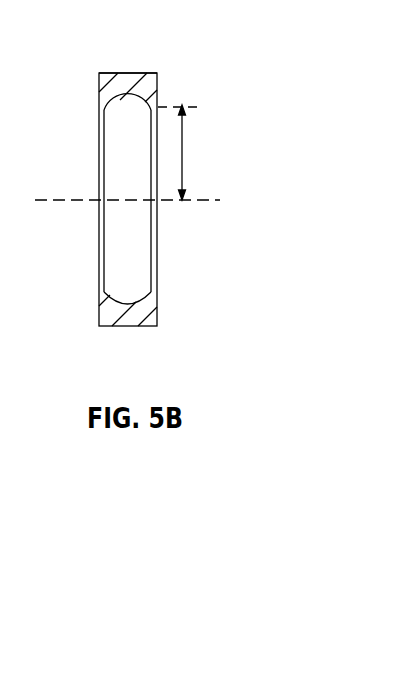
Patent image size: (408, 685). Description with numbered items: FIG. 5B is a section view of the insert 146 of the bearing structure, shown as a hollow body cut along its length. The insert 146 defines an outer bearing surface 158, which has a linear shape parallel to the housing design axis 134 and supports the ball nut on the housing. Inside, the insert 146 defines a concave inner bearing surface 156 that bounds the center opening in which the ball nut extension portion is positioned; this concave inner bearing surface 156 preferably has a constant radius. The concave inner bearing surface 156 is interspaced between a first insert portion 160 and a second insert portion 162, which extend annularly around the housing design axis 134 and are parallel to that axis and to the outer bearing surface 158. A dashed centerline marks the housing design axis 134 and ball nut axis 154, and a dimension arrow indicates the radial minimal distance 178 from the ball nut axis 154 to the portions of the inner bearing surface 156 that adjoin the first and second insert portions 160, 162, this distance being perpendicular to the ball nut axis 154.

The insert 146 is at (128, 82).
The insert outer bearing surface 158 is at (124, 73).
The first insert portion 160 is at (100, 112).
The insert inner bearing surface 156 is at (123, 94).
The second insert portion 162 is at (156, 110).
The radial minimal distance 178 is at (182, 152).
The housing design axis 134 is at (167, 217).
The ball nut axis 154 is at (192, 201).